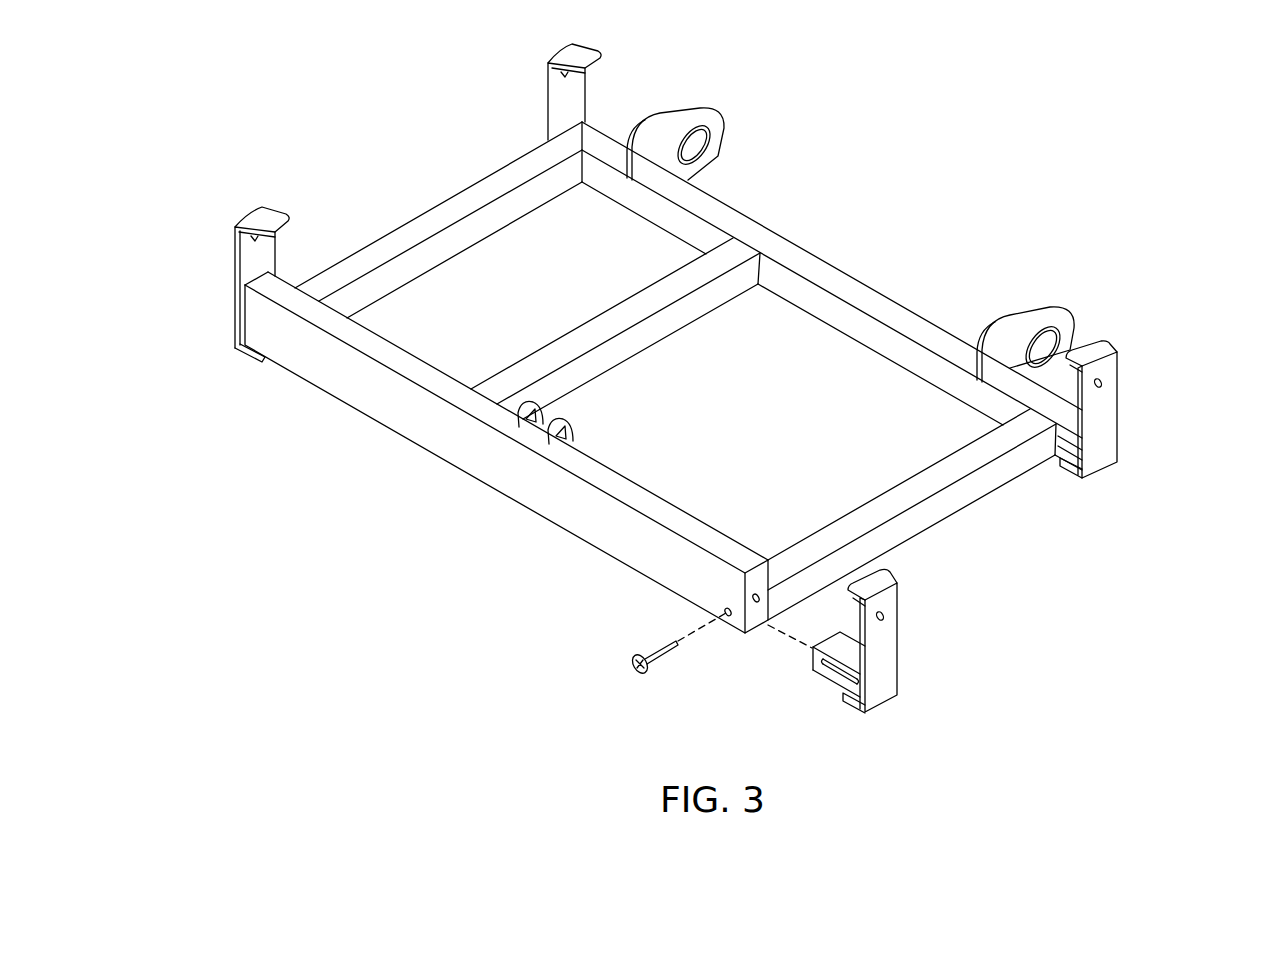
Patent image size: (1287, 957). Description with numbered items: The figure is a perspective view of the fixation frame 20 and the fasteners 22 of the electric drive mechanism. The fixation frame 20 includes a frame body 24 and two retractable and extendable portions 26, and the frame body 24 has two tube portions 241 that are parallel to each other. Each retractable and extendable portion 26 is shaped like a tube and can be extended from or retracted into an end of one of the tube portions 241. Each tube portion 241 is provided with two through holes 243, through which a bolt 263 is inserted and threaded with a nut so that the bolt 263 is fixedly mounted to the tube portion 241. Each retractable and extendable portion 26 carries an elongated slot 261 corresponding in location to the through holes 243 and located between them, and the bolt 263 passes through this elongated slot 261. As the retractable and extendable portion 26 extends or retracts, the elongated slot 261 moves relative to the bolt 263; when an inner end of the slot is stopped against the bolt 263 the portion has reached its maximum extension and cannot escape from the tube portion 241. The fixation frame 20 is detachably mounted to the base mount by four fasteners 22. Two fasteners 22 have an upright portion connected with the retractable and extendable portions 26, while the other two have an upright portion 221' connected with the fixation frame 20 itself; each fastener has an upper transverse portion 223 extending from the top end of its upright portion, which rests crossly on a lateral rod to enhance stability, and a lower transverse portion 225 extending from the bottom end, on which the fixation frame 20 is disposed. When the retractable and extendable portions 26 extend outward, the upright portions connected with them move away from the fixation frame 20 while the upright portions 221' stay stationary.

The fixation frame 20 is at (828, 168).
The fastener 22 is at (1213, 321).
The frame body 24 is at (921, 331).
The upright portion 221' is at (378, 203).
The upper transverse portion 223 is at (1093, 350).
The lower transverse portion 225 is at (1068, 474).
The tube portion 241 is at (750, 636).
The through hole 243 is at (724, 611).
The retractable and extendable portion 26 is at (812, 666).
The elongated slot 261 is at (838, 681).
The bolt 263 is at (656, 658).